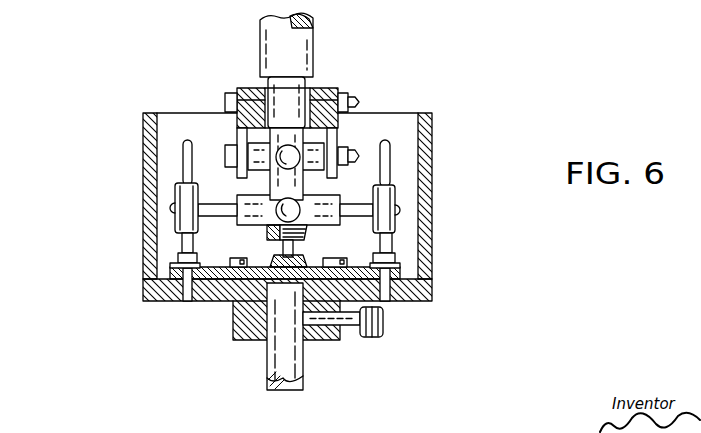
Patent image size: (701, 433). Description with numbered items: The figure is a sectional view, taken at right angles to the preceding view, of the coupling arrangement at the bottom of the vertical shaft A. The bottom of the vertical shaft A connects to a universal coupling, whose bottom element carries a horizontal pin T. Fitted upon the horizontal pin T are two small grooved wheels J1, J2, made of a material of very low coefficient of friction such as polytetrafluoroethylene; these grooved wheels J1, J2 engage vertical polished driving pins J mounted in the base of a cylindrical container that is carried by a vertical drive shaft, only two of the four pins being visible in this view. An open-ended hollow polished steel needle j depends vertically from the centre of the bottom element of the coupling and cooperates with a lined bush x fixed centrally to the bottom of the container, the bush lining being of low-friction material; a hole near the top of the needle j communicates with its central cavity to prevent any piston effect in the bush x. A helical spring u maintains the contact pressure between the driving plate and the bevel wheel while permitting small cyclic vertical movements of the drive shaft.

The vertical shaft A is at (302, 65).
The guide pin J is at (182, 146).
The grooved wheel J1 is at (183, 218).
The grooved wheel J2 is at (385, 220).
The open-ended hollow polished steel needle j is at (234, 300).
The lined bush x is at (340, 330).
The helical spring u is at (303, 378).
The horizontal pin T is at (410, 302).